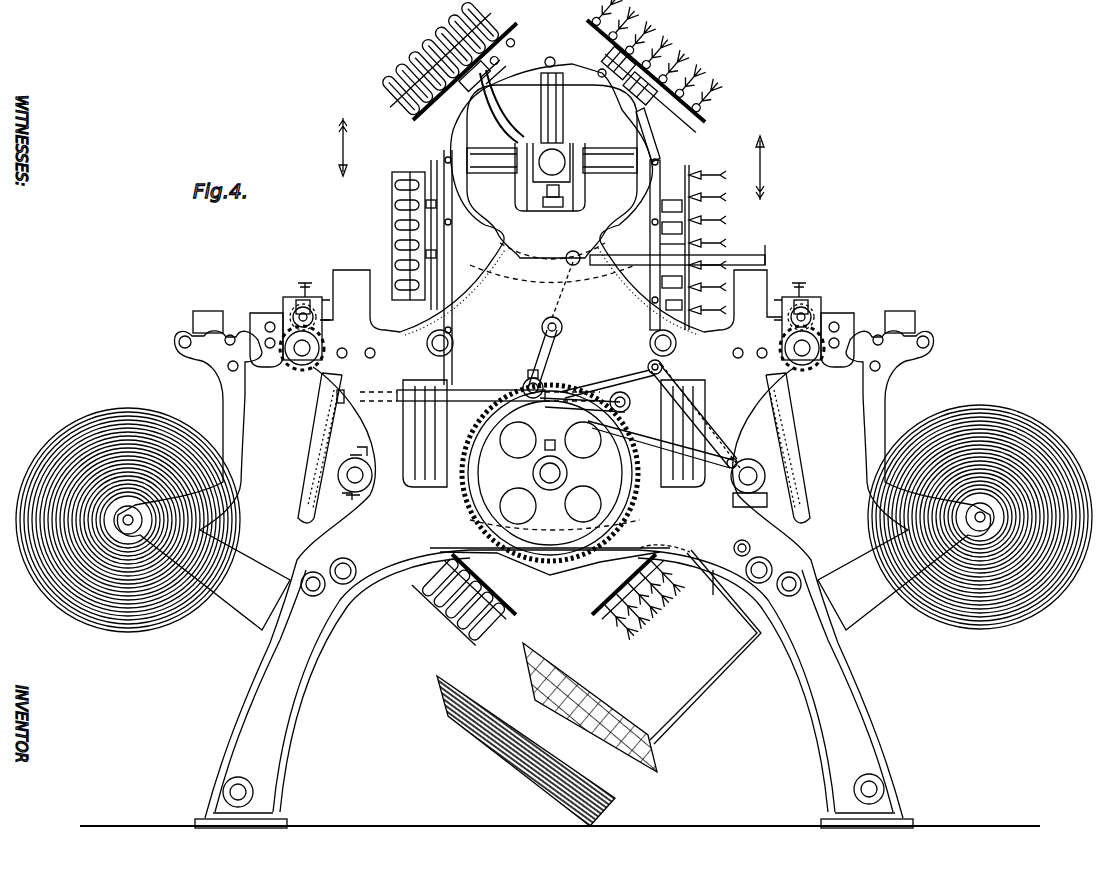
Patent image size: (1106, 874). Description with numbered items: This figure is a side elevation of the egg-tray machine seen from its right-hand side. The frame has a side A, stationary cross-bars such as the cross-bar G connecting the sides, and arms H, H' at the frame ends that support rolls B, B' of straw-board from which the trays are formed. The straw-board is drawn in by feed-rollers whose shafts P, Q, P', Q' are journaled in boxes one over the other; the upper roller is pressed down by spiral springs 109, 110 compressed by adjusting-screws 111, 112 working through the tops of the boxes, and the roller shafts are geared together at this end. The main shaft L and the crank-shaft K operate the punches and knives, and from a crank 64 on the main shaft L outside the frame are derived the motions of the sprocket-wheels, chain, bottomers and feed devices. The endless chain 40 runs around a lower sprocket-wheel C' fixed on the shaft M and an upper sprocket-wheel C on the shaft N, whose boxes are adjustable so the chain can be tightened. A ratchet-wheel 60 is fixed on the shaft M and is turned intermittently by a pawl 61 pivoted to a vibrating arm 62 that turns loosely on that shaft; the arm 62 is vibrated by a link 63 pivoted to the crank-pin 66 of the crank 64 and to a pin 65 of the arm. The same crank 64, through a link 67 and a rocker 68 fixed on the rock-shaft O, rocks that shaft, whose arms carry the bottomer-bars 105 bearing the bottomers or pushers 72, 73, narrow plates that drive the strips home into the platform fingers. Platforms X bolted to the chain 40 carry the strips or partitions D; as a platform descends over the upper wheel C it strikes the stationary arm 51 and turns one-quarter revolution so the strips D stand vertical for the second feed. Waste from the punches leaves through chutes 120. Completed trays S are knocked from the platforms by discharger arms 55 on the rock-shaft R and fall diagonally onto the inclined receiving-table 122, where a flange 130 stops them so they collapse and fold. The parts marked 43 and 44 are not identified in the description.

The endless chain 40 is at (655, 219).
The block 43 is at (554, 313).
The link 44 is at (508, 58).
The stationary arm 51 is at (503, 124).
The discharger arms 55 is at (667, 549).
The ratchet-wheel 60 is at (550, 473).
The pawl 61 is at (616, 392).
The vibrating arm 62 is at (588, 388).
The link 63 is at (702, 422).
The crank 64 is at (732, 484).
The pin 65 is at (662, 368).
The crank-pin 66 is at (701, 416).
The link 67 is at (660, 449).
The rocker 68 is at (528, 380).
The bottomer or pusher 72 is at (766, 250).
The bottomer or pusher 73 is at (336, 398).
The bottomer-bars 105 is at (497, 320).
The spiral spring 109 is at (302, 315).
The spiral spring 110 is at (806, 318).
The adjusting-screw 111 is at (805, 280).
The adjusting-screw 112 is at (302, 281).
The chutes 120 is at (318, 470).
The receiving-table 122 is at (705, 647).
The flange 130 is at (518, 786).
The side of the frame A is at (551, 199).
The roll of straw-board B is at (120, 520).
The roll of straw-board B' is at (980, 517).
The upper sprocket-wheel C is at (552, 170).
The lower sprocket-wheel C' is at (554, 433).
The strips or partitions D is at (391, 229).
The cross-bar G is at (553, 568).
The arm H is at (904, 480).
The arm H' is at (203, 480).
The crank-shaft K is at (360, 487).
The main shaft L is at (750, 509).
The shaft M is at (533, 474).
The shaft N is at (550, 177).
The rock-shaft O is at (562, 294).
The feed-roller shaft P is at (302, 359).
The feed-roller shaft P' is at (802, 359).
The feed-roller shaft Q is at (286, 329).
The feed-roller shaft Q' is at (823, 328).
The rock-shaft R is at (751, 548).
The tray S is at (640, 695).
The platform X is at (551, 86).